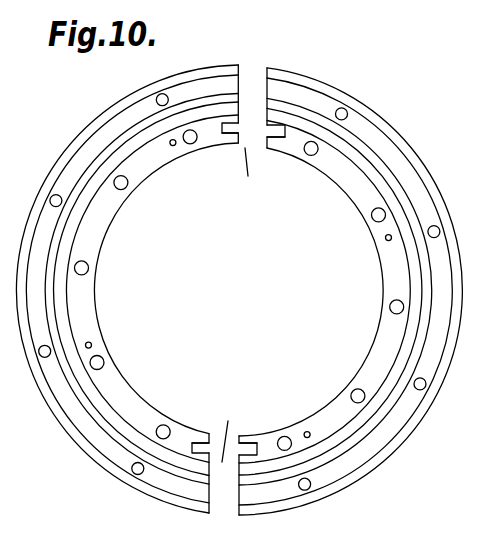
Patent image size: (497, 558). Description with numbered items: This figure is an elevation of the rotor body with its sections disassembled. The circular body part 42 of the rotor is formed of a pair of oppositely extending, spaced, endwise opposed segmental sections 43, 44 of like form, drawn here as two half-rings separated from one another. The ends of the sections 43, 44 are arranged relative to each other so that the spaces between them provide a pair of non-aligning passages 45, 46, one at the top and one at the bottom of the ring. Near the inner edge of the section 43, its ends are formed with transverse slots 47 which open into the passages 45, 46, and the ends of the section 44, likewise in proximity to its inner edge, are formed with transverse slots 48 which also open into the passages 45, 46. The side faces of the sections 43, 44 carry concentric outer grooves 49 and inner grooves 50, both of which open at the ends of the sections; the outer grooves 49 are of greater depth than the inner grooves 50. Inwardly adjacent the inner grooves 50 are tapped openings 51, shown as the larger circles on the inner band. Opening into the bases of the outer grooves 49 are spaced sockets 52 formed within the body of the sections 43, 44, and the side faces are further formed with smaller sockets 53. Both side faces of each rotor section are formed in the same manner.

The circular body part 42 is at (421, 163).
The segmental section 43 is at (110, 352).
The segmental section 44 is at (359, 208).
The passage 45 is at (239, 176).
The passage 46 is at (229, 432).
The transverse slot 47 is at (230, 130).
The transverse slot 48 is at (278, 139).
The outer groove 49 is at (98, 443).
The inner groove 50 is at (113, 417).
The tapped opening 51 is at (370, 217).
The socket 52 is at (309, 490).
The socket 53 is at (173, 146).